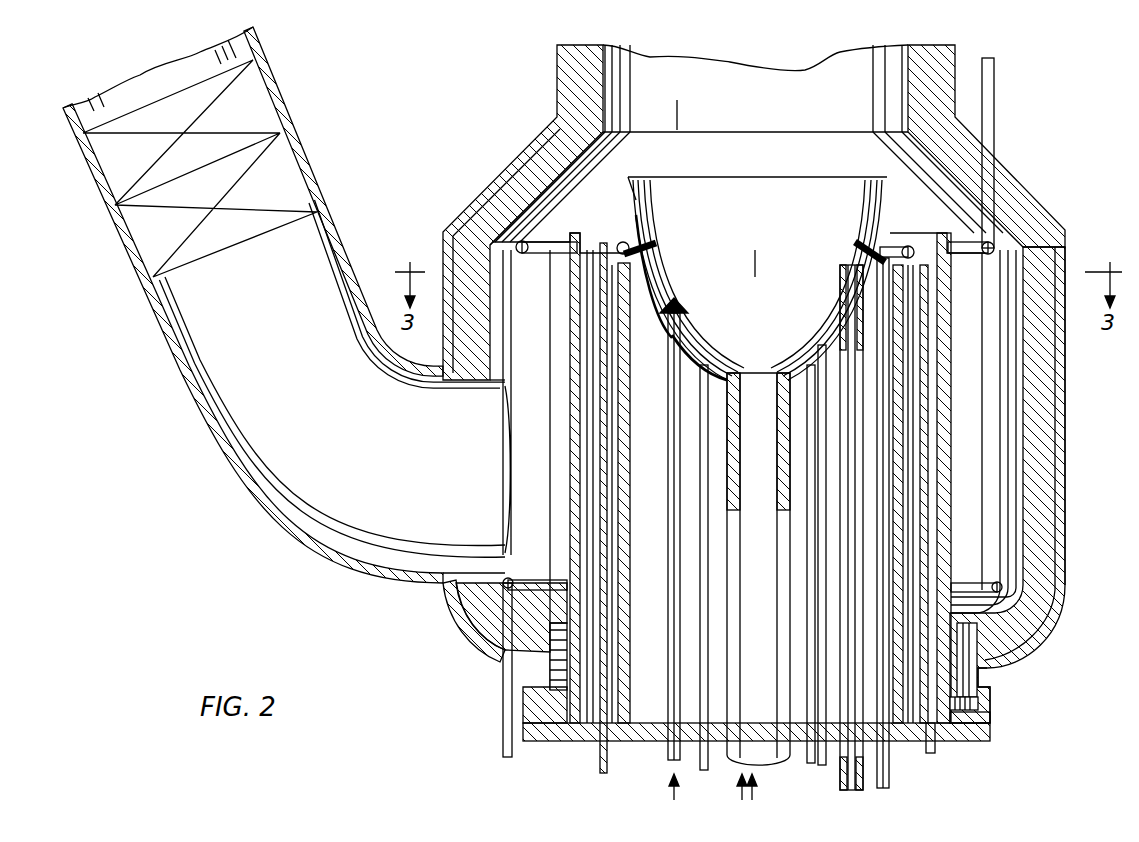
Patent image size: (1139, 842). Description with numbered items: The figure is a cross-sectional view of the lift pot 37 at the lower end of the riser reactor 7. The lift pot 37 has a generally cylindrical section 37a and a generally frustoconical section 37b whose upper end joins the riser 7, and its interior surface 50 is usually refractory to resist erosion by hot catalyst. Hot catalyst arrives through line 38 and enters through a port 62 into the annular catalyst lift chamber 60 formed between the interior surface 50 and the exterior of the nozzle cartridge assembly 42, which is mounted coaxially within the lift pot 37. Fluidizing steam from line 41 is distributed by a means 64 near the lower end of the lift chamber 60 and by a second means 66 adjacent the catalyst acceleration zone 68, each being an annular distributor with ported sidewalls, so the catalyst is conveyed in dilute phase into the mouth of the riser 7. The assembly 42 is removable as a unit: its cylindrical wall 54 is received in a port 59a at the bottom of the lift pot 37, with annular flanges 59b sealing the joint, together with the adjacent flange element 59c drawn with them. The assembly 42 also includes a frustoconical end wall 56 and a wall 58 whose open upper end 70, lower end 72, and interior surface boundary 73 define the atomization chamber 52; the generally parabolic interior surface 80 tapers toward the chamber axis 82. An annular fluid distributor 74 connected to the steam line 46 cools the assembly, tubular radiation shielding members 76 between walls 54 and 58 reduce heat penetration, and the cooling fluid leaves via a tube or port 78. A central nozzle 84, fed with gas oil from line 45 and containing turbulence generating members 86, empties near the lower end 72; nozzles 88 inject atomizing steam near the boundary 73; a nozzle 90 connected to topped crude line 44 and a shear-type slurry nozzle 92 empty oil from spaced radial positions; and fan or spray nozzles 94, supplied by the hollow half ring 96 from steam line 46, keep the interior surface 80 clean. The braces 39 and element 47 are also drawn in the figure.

The riser reactor 7 is at (555, 66).
The lift pot 37 is at (1078, 492).
The generally cylindrical section 37a is at (1068, 422).
The generally frustoconical section 37b is at (1030, 183).
The line 38 is at (195, 425).
The cross braces 39 is at (122, 226).
The line 41 is at (983, 44).
The nozzle cartridge assembly 42 is at (568, 775).
The line 44 is at (672, 795).
The line 45 is at (742, 800).
The line 46 is at (603, 808).
The feed tube 47 is at (845, 802).
The interior surface 50 is at (1018, 417).
The atomization chamber 52 is at (755, 190).
The generally cylindrical wall 54 is at (953, 292).
The end wall 56 is at (595, 208).
The wall 58 is at (645, 310).
The port 59a is at (992, 685).
The generally annular flange 59b is at (985, 708).
The flange plate 59c is at (992, 732).
The catalyst lift chamber 60 is at (526, 470).
The port 62 is at (500, 446).
The means for distributing fluidizing gas 64 is at (546, 572).
The second means for distributing fluidization gas 66 is at (530, 244).
The catalyst acceleration zone 68 is at (612, 168).
The open upper end 70 is at (632, 180).
The lower end 72 is at (735, 378).
The interior surface boundary 73 is at (718, 358).
The annular fluid distributor 74 is at (585, 262).
The radiation shielding members 76 is at (604, 372).
The tube or port 78 is at (926, 776).
The interior surface 80 is at (655, 252).
The axis 82 is at (755, 258).
The central nozzle 84 is at (780, 465).
The turbulence generating members 86 is at (733, 440).
The nozzles 88 is at (700, 528).
The nozzle 90 is at (680, 395).
The nozzle 92 is at (840, 418).
The fan or spray type nozzles 94 is at (866, 243).
The hollow half ring 96 is at (630, 230).